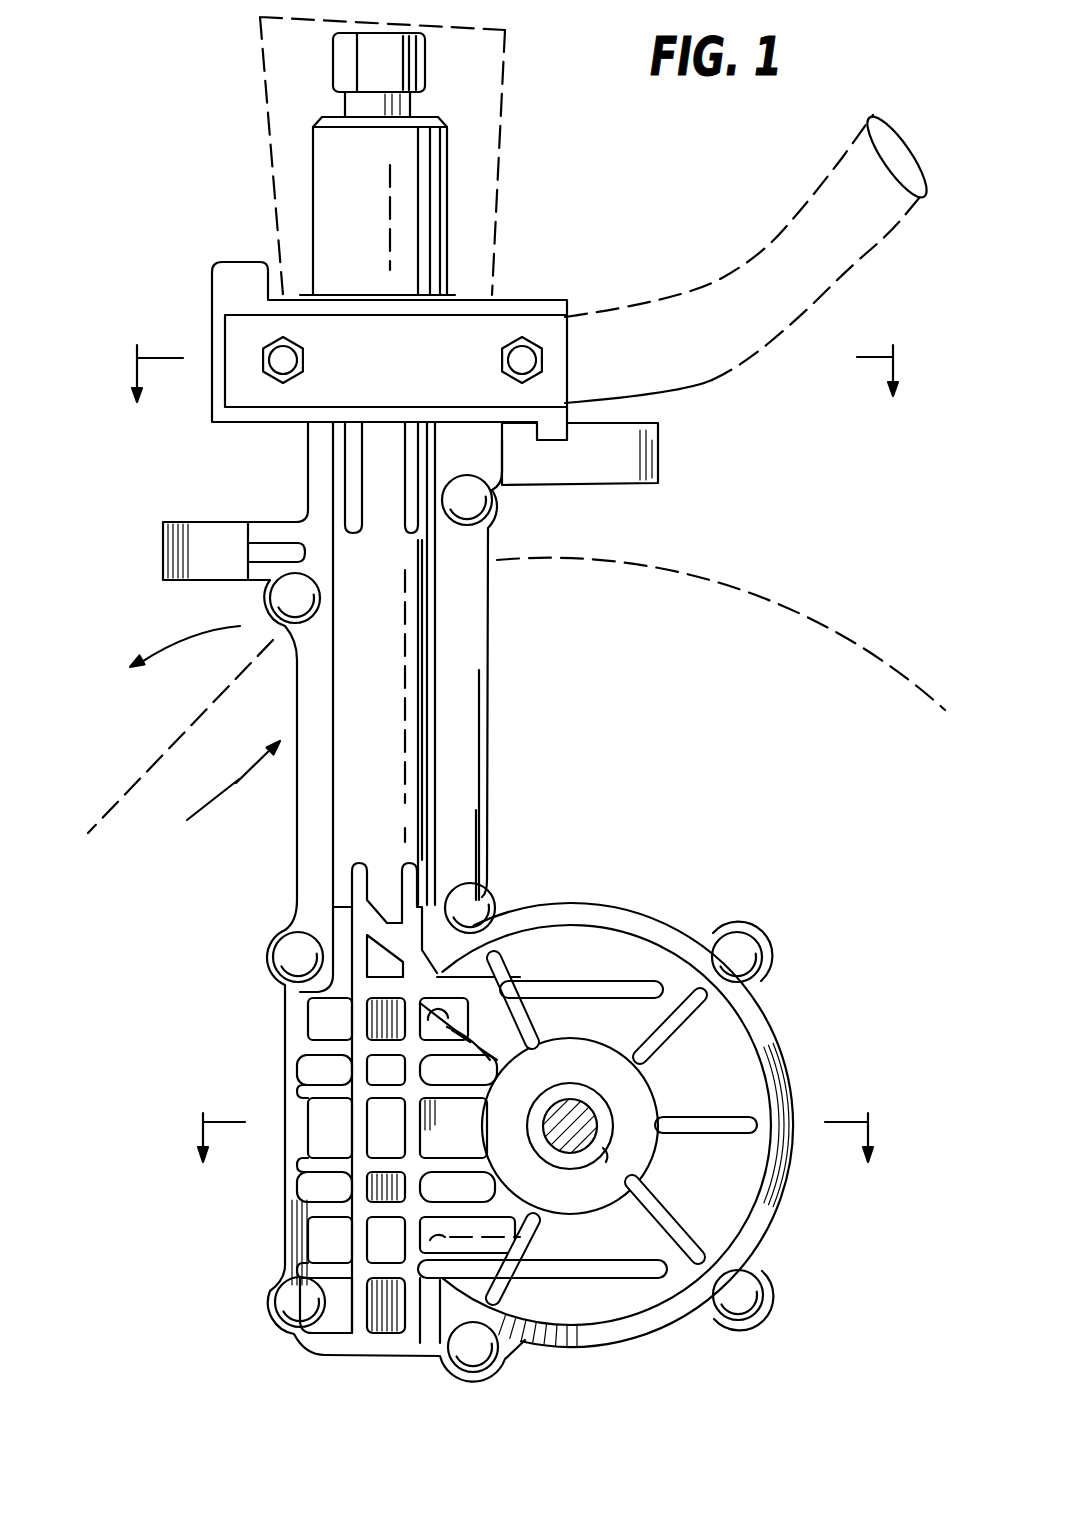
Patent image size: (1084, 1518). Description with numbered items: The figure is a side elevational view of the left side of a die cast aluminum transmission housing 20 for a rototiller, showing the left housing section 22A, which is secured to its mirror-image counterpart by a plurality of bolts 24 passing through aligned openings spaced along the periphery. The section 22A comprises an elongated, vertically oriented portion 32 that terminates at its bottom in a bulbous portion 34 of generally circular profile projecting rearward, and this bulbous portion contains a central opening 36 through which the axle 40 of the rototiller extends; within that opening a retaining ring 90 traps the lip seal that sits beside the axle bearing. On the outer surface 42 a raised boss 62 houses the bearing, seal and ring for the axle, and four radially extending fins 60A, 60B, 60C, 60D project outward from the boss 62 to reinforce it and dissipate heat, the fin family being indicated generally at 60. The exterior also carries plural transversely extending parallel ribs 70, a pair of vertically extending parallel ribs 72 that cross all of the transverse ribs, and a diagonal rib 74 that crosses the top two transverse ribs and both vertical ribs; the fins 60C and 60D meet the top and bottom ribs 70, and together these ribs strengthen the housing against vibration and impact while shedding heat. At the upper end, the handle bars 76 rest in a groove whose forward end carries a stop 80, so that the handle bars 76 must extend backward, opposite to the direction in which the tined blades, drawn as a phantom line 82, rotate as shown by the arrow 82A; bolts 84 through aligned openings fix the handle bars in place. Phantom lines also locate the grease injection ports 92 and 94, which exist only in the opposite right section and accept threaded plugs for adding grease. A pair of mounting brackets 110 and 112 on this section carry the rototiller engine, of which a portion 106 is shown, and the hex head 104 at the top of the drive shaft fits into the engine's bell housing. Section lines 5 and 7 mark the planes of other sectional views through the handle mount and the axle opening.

The transmission housing 20 is at (205, 800).
The left housing section 22A is at (460, 732).
The bolts 24 is at (480, 517).
The vertically oriented portion 32 is at (297, 687).
The bulbous portion 34 is at (637, 977).
The central opening 36 is at (608, 1143).
The axle 40 is at (573, 1100).
The outer surface 42 is at (427, 600).
The slot 60 is at (706, 1125).
The radially extending fin 60A is at (753, 997).
The radially extending fin 60B is at (753, 1257).
The radially extending fin 60C is at (492, 983).
The radially extending fin 60D is at (500, 1298).
The raised boss 62 is at (628, 1173).
The transversely extending parallel ribs 70 is at (650, 980).
The vertically extending parallel ribs 72 is at (412, 1322).
The diagonal rib 74 is at (435, 988).
The handle bars 76 is at (758, 350).
The stop 80 is at (218, 300).
The phantom line of blades 82 is at (743, 583).
The arrow 82A is at (178, 640).
The bolts 84 is at (527, 342).
The retaining ring 90 is at (597, 1100).
The grease injection port 92 is at (468, 1040).
The grease injection port 94 is at (520, 1238).
The hex head 104 is at (425, 67).
The engine portion 106 is at (470, 148).
The mounting bracket 110 is at (165, 548).
The mounting bracket 112 is at (658, 452).
The section line 5- 5 is at (515, 392).
The section line 7- 7 is at (537, 1162).